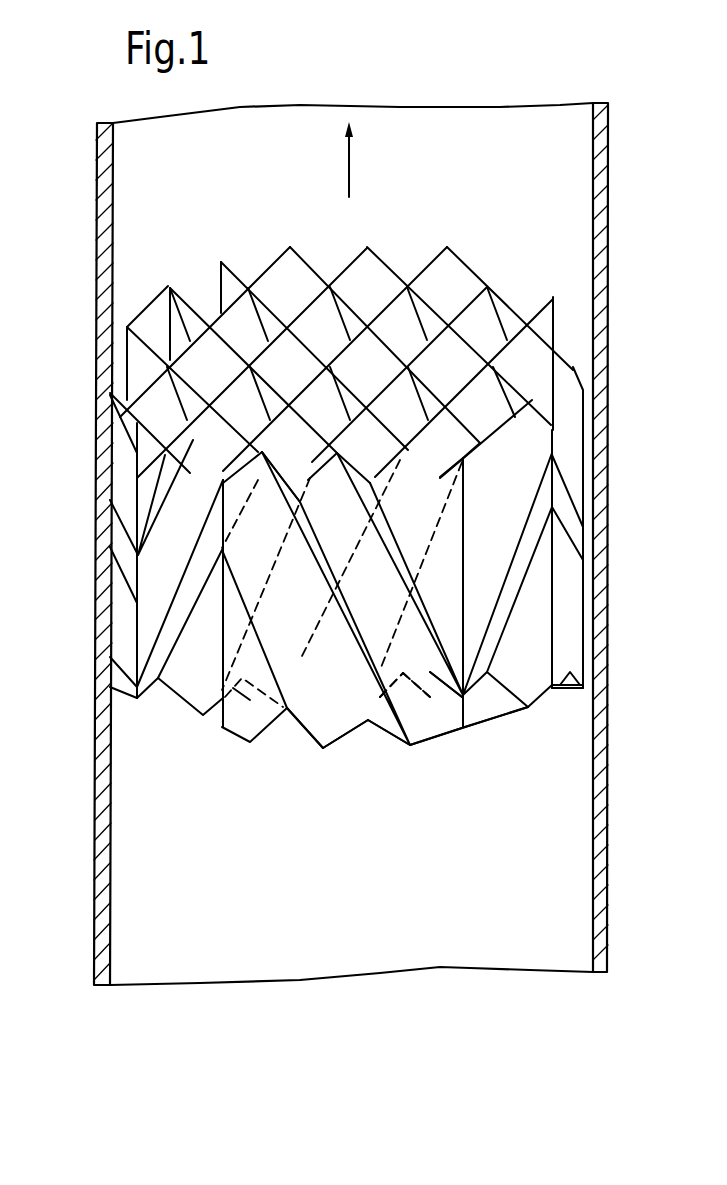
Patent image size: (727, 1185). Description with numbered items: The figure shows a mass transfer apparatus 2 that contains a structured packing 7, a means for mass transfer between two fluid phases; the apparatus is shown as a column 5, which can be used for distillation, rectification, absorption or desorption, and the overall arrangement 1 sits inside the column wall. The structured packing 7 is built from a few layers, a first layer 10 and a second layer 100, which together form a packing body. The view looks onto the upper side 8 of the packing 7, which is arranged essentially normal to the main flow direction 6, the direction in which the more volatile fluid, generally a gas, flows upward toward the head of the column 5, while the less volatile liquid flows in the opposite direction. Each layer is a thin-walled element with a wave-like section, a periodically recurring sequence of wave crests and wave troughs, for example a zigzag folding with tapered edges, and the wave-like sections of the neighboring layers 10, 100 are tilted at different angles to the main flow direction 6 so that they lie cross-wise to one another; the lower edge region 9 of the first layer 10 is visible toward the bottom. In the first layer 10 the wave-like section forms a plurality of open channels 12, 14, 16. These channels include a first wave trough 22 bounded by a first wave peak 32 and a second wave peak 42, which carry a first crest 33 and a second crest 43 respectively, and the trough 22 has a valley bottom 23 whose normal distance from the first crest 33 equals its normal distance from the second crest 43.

The static mixer 1 is at (610, 480).
The mass transfer apparatus 2 is at (498, 188).
The column 5 is at (609, 303).
The main flow direction 6 is at (352, 172).
The structured packing 7 is at (572, 613).
The upper side 8 is at (130, 315).
The lower edge of mixing element 9 is at (135, 690).
The first layer 10 is at (240, 693).
The open channel 12 is at (371, 730).
The open channel 14 is at (308, 478).
The open channel 16 is at (446, 723).
The first wave trough 22 is at (410, 750).
The valley bottom 23 is at (395, 720).
The first wave peak 32 is at (358, 752).
The first crest 33 is at (315, 728).
The second wave peak 42 is at (443, 711).
The second crest 43 is at (462, 692).
The second layer 100 is at (148, 612).